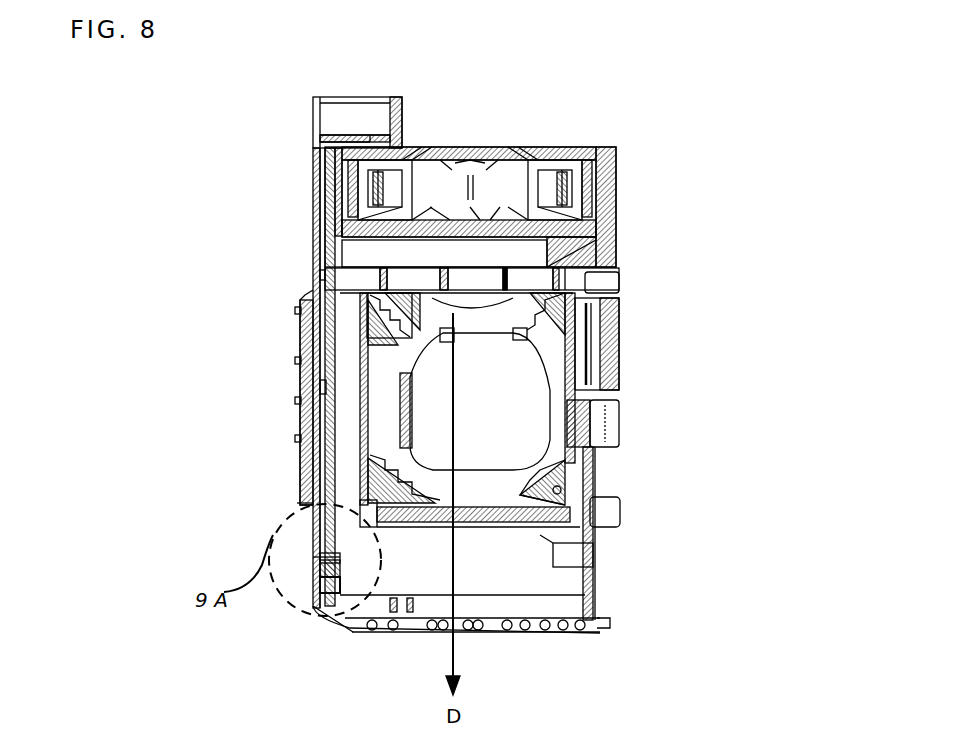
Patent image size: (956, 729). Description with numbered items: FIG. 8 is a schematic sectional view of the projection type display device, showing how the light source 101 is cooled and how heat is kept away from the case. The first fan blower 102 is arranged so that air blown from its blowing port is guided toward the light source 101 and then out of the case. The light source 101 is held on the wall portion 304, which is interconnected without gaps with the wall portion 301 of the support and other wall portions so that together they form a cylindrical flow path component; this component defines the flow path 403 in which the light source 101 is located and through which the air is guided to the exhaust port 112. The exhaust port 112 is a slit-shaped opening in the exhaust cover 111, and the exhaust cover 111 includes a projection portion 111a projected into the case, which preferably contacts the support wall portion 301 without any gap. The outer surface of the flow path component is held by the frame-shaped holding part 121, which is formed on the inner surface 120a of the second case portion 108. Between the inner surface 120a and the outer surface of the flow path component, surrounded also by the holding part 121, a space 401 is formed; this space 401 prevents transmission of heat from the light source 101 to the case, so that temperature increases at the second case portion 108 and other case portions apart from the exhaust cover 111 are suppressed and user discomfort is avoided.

The light source 101 is at (530, 420).
The first fan blower 102 is at (478, 143).
The second case portion 108 is at (300, 331).
The exhaust cover 111 is at (483, 607).
The projection portion 111a is at (347, 623).
The exhaust port 112 is at (523, 617).
The inner surface of the case 120a is at (326, 387).
The holding part 121 is at (313, 277).
The wall portion of the support 301 is at (313, 411).
The wall portion for holding the light source 304 is at (620, 343).
The space 401 is at (307, 467).
The flow path 403 is at (407, 342).